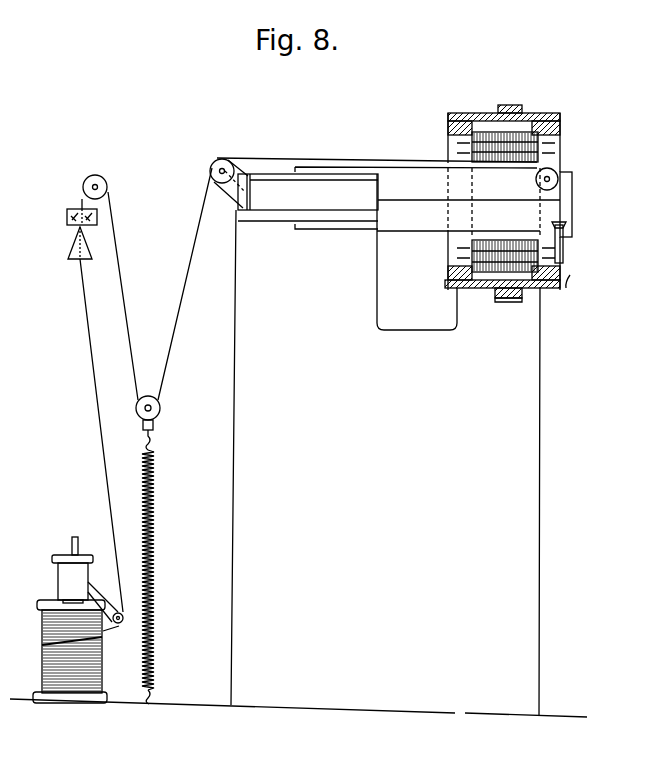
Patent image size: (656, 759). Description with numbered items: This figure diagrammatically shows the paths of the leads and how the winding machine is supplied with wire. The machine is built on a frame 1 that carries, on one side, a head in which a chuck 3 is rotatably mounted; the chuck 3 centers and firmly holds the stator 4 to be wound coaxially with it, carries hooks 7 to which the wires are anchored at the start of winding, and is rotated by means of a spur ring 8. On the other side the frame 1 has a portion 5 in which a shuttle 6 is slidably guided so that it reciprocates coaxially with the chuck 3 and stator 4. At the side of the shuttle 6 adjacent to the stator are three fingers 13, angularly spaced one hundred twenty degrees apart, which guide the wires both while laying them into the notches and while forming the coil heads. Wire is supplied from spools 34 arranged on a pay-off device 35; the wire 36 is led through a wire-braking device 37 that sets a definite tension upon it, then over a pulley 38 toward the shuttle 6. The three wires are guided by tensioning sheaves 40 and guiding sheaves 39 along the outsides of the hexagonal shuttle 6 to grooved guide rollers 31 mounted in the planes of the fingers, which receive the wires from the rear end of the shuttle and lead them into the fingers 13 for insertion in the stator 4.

The frame 1 is at (298, 445).
The chuck 3 is at (562, 121).
The stator 4 is at (527, 138).
The portion 5 is at (271, 216).
The shuttle 6 is at (468, 204).
The hooks 7 is at (558, 288).
The spur ring 8 is at (511, 105).
The fingers 13 is at (568, 256).
The grooved discs 31 is at (562, 170).
The spools 34 is at (50, 602).
The pay-off device 35 is at (62, 572).
The wire 36 is at (106, 487).
The wire-braking device 37 is at (67, 216).
The pulley 38 is at (85, 186).
The guiding sheaves 39 is at (210, 171).
The tensioning sheaves 40 is at (148, 397).